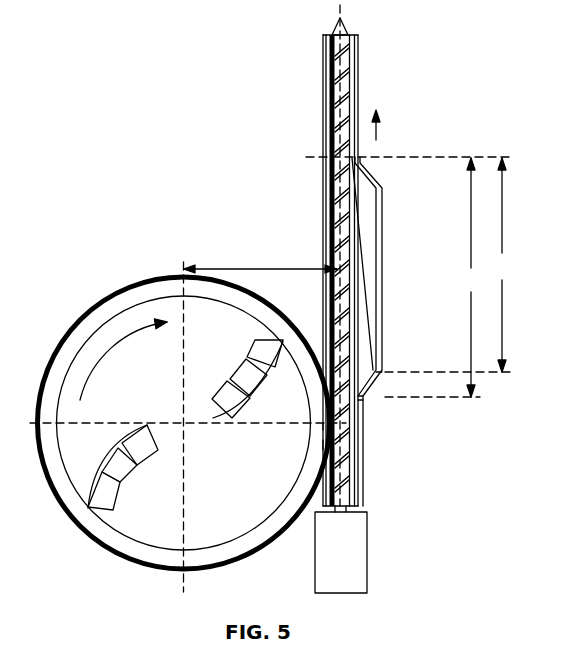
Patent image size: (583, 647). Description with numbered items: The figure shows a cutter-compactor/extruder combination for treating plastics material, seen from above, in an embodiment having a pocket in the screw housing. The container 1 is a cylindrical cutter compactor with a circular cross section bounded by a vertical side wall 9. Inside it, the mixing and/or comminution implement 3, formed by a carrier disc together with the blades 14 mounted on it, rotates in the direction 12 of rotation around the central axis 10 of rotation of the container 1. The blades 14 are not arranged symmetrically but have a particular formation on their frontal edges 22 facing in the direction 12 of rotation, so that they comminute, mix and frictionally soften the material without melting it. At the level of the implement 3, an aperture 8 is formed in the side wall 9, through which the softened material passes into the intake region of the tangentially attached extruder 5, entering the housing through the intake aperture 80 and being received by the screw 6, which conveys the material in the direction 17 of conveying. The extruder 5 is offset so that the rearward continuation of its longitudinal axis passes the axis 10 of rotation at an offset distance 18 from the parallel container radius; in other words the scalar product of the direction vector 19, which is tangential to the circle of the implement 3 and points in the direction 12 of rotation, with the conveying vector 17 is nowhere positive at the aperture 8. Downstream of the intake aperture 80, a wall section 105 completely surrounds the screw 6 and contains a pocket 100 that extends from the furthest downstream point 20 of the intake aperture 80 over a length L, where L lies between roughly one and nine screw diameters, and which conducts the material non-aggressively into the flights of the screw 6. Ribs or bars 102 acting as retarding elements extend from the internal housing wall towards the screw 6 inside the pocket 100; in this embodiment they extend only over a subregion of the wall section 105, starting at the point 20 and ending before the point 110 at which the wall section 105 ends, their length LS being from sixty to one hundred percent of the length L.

The container 1 is at (90, 237).
The mixing and/or comminution implement 3 is at (249, 413).
The extruder 5 is at (312, 192).
The screw 6 is at (332, 120).
The aperture 8 is at (320, 430).
The side wall 9 is at (115, 293).
The axis of rotation 10 is at (185, 425).
The direction of rotation 12 is at (121, 342).
The blades 14 is at (143, 452).
The direction of conveying 17 is at (379, 128).
The offset distance 18 is at (222, 268).
The direction vector 19 is at (358, 552).
The furthest downstream point 20 is at (404, 420).
The frontal edges 22 is at (124, 436).
The intake aperture 80 is at (325, 447).
The pocket 100 is at (363, 368).
The ribs or bars 102 is at (368, 236).
The wall section 105 is at (327, 253).
The point 110 is at (313, 162).
The length L is at (408, 277).
The length of retarding element LS is at (448, 265).